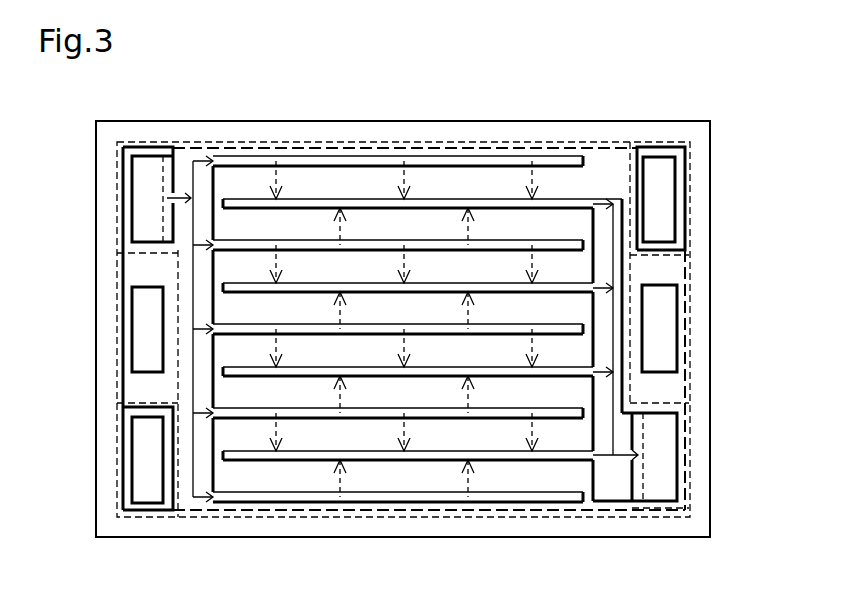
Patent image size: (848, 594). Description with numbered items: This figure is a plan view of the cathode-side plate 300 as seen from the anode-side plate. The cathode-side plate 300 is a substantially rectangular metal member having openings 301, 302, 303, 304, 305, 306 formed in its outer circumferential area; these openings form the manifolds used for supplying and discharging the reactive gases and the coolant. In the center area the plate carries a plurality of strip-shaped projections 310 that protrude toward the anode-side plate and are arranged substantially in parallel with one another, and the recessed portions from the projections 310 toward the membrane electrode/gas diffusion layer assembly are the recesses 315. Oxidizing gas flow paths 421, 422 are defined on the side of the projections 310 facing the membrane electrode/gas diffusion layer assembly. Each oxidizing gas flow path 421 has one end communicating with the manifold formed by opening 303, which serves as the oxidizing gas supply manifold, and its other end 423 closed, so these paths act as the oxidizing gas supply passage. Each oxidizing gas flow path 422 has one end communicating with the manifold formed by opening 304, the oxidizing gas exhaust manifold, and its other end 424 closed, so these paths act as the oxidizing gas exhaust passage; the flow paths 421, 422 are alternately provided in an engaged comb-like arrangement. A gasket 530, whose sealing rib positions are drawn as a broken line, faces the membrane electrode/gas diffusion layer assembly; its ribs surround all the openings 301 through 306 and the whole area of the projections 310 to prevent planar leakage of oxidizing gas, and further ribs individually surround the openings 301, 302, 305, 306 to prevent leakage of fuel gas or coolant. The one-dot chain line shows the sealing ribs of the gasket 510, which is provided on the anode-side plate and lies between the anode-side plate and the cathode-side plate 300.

The cathode-side plate 300 is at (702, 121).
The opening 301 is at (148, 458).
The opening 302 is at (665, 194).
The opening 303 is at (148, 183).
The opening 304 is at (665, 443).
The opening 305 is at (148, 328).
The opening 306 is at (663, 328).
The projection 310 is at (320, 198).
The recess 315 is at (385, 232).
The oxidizing gas flow path 421 is at (252, 237).
The oxidizing gas flow path 422 is at (440, 208).
The closed end 423 is at (577, 243).
The closed end 424 is at (257, 453).
The gasket 510 is at (478, 142).
The gasket 530 is at (545, 150).